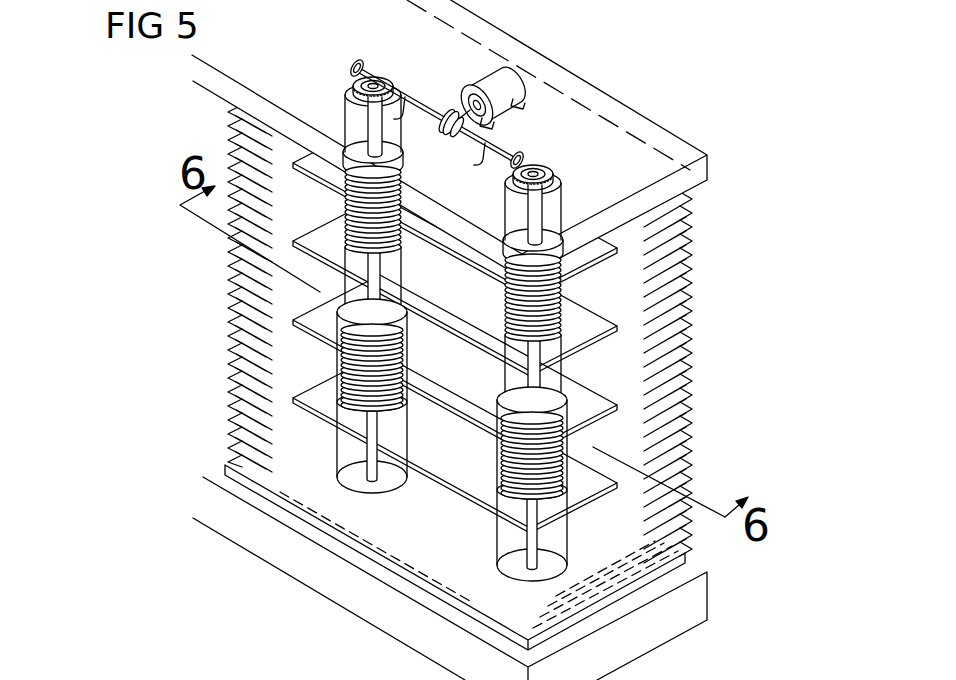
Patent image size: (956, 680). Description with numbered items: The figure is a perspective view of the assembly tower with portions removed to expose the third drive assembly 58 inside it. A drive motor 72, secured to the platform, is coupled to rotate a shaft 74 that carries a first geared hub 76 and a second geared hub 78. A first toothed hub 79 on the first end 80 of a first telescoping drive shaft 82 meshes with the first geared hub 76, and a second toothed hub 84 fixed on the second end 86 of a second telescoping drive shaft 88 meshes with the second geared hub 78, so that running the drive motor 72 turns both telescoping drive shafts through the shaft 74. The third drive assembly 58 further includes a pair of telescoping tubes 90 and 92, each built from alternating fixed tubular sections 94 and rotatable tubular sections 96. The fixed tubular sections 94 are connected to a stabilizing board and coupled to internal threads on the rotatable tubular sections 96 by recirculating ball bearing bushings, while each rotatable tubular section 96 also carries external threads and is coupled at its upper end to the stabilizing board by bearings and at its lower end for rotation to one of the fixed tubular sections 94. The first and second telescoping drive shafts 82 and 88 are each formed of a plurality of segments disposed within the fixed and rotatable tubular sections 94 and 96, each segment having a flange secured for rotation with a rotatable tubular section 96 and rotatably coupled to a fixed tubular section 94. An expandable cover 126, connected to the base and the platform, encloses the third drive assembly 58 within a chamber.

The third drive assembly 58 is at (735, 229).
The drive motor 72 is at (505, 88).
The shaft 74 is at (432, 110).
The first geared hub 76 is at (354, 61).
The second geared hub 78 is at (521, 154).
The first toothed hub 79 is at (380, 72).
The first end 80 is at (385, 77).
The first telescoping drive shaft 82 is at (372, 128).
The second toothed hub 84 is at (542, 171).
The second end 86 is at (553, 177).
The second telescoping drive shaft 88 is at (543, 212).
The telescoping tube 90 is at (604, 364).
The telescoping tube 92 is at (340, 80).
The fixed tubular sections 94 is at (395, 286).
The rotatable tubular sections 96 is at (501, 398).
The expandable cover 126 is at (682, 432).